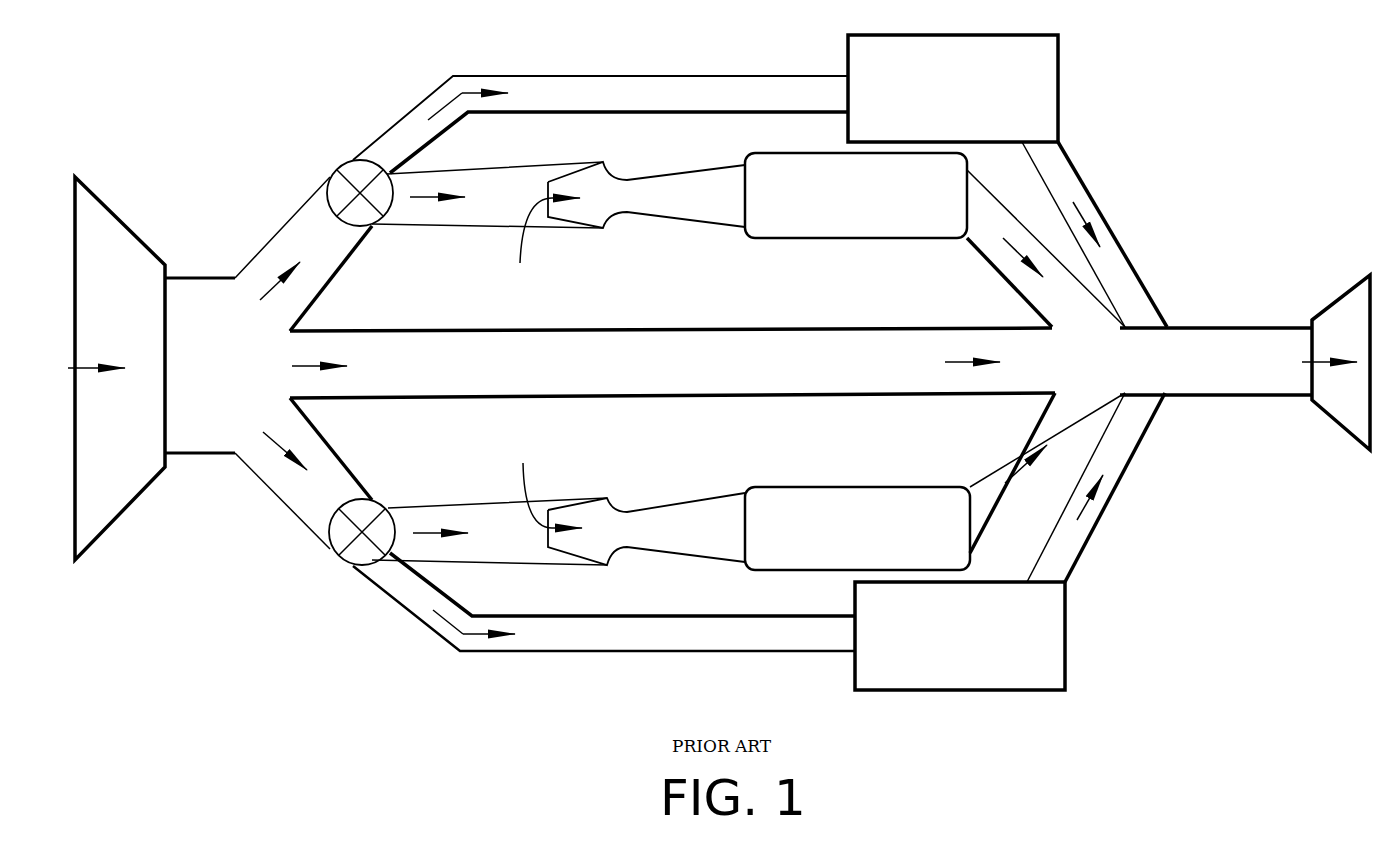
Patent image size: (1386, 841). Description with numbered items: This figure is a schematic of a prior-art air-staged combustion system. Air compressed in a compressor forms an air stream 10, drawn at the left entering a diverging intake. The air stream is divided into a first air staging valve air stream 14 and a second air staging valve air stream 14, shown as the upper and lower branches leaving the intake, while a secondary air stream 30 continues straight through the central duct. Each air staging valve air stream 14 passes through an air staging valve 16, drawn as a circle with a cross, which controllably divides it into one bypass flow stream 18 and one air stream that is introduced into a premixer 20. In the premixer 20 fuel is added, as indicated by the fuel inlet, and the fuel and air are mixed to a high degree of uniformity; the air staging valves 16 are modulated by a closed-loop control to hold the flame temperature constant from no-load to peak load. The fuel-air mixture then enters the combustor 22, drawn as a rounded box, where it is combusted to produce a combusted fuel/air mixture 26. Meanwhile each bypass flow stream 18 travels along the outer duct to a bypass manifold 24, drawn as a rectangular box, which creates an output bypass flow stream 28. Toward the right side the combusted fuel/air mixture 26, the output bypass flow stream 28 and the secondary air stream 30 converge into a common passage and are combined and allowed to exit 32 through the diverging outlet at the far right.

The air stream 10 is at (82, 367).
The air staging valve air stream 14 is at (270, 293).
The air staging valve 16 is at (327, 183).
The bypass flow stream 18 is at (475, 92).
The premixer 20 is at (673, 173).
The combustor 22 is at (768, 153).
The bypass manifold 24 is at (1062, 78).
The combusted fuel/air mixture 26 is at (1012, 245).
The output bypass flow stream 28 is at (1080, 218).
The secondary air stream 30 is at (957, 364).
The exit 32 is at (1305, 364).